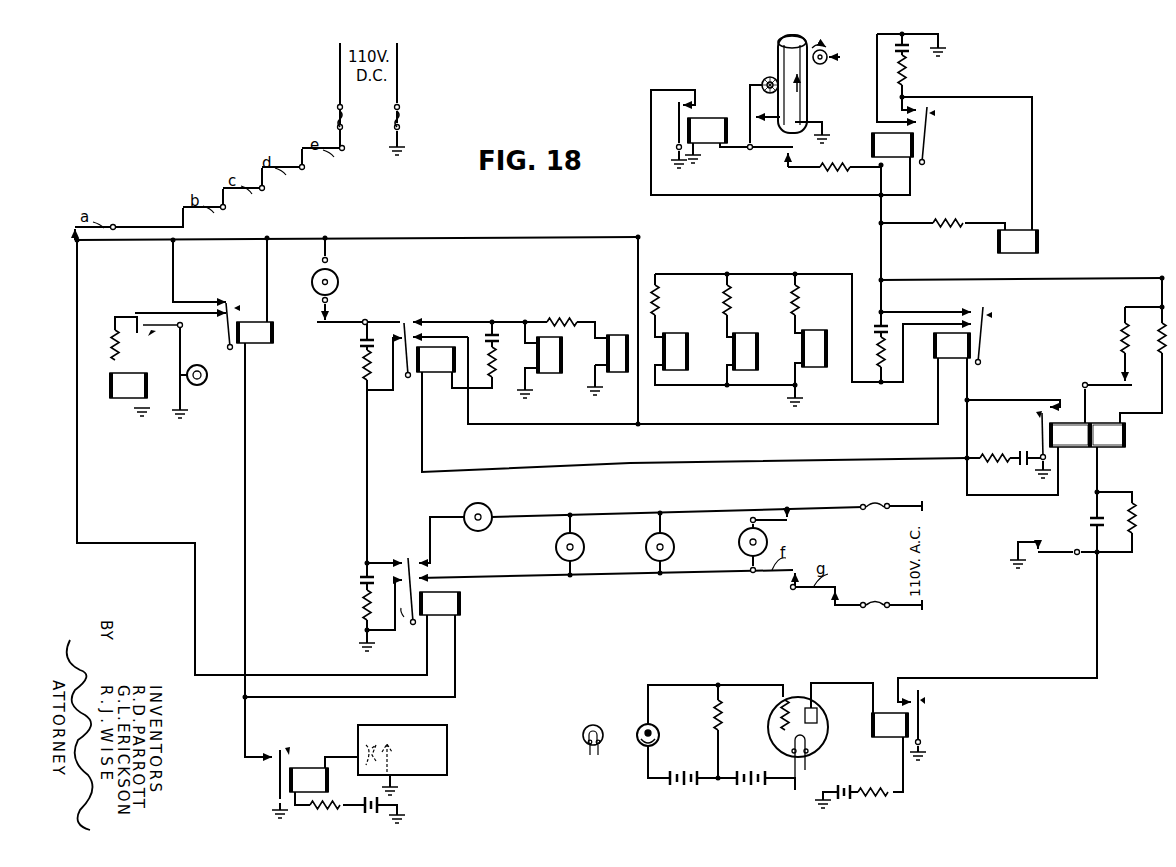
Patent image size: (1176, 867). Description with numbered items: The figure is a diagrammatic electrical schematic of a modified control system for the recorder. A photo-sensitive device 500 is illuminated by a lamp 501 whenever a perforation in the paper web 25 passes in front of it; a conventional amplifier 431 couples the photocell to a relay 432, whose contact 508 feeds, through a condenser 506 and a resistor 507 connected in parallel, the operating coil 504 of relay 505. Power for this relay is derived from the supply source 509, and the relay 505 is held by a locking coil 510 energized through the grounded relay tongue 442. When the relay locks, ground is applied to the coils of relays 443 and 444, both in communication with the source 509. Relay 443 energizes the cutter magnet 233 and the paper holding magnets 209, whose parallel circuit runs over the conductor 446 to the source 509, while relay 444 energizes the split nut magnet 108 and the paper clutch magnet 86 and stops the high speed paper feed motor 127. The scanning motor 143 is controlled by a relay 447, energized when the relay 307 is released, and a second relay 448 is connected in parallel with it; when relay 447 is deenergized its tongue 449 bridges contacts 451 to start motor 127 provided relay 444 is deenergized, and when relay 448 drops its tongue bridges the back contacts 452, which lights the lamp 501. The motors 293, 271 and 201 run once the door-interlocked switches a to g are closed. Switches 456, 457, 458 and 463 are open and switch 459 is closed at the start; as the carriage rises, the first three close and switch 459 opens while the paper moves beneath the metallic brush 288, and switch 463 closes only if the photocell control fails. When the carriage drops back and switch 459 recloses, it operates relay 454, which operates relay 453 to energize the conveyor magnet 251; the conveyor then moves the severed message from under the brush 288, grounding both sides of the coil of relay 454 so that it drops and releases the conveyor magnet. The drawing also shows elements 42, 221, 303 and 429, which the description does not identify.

The paper web 25 is at (808, 94).
The tape reel 42 is at (778, 40).
The paper clutch magnet 86 is at (608, 355).
The split nut magnet 108 is at (538, 355).
The high speed paper feed motor 127 is at (332, 272).
The scanning motor 143 is at (491, 507).
The motor 201 is at (739, 543).
The paper holding magnets 209 is at (688, 355).
The relay 221 is at (130, 395).
The cutter magnet 233 is at (812, 338).
The conveyor magnet 251 is at (1038, 238).
The motor 271 is at (646, 548).
The metallic brush 288 is at (766, 78).
The motor 293 is at (556, 548).
The amplifier 303 is at (447, 748).
The relay 307 is at (306, 770).
The lamp 429 is at (200, 386).
The amplifier 431 is at (770, 716).
The relay 432 is at (900, 737).
The grounded relay tongue 442 is at (1040, 438).
The relay 443 is at (952, 352).
The relay 444 is at (435, 372).
The conductor 446 is at (884, 258).
The relay 447 is at (452, 604).
The second relay 448 is at (253, 338).
The tongue 449 is at (408, 630).
The contacts 451 is at (406, 556).
The back contacts 452 is at (222, 306).
The relay 453 is at (874, 137).
The relay 454 is at (710, 138).
The switch 456 is at (337, 323).
The switch 457 is at (1106, 385).
The switch 458 is at (146, 322).
The switch 459 is at (770, 155).
The switch 463 is at (1044, 555).
The photo-sensitive device 500 is at (638, 730).
The lamp 501 is at (597, 725).
The relay coil 504 is at (1108, 447).
The relay 505 is at (1172, 443).
The condenser 506 is at (1090, 527).
The resistor 507 is at (1137, 524).
The contact 508 is at (915, 702).
The supply source 509 is at (396, 90).
The locking coil 510 is at (1072, 446).